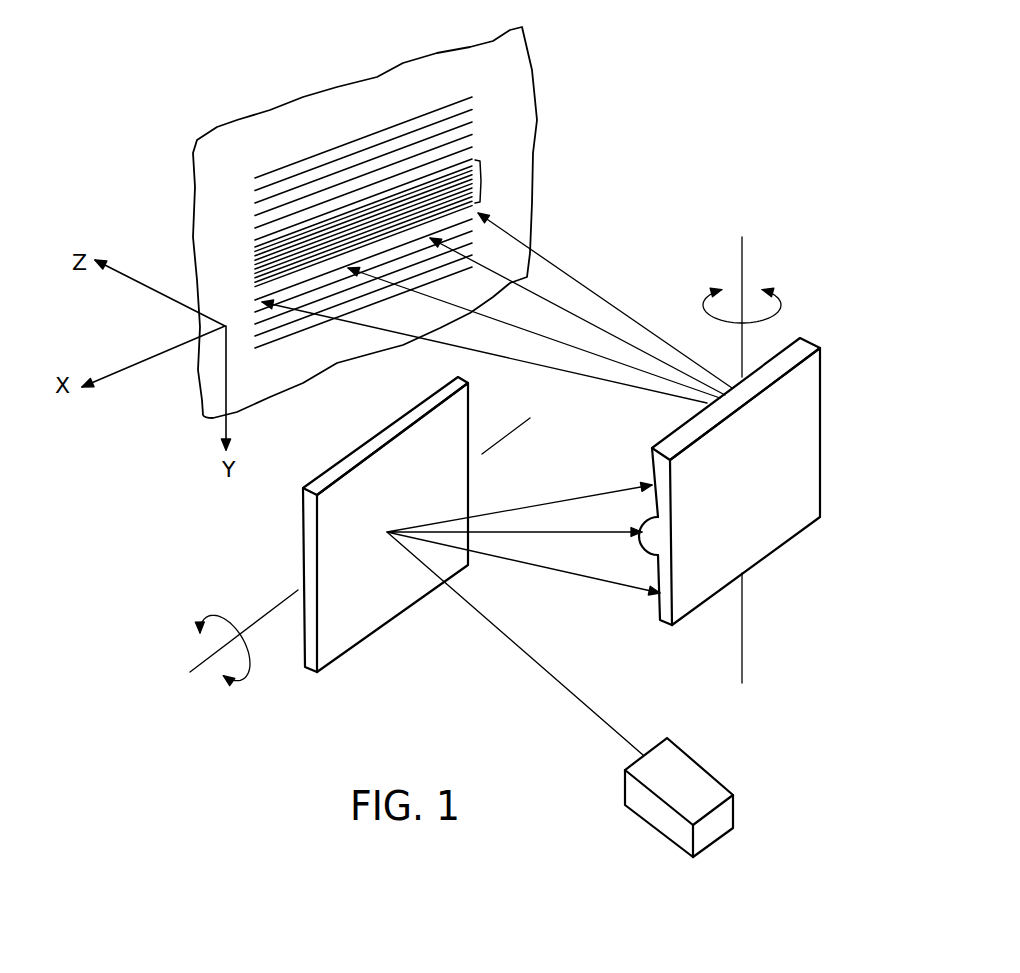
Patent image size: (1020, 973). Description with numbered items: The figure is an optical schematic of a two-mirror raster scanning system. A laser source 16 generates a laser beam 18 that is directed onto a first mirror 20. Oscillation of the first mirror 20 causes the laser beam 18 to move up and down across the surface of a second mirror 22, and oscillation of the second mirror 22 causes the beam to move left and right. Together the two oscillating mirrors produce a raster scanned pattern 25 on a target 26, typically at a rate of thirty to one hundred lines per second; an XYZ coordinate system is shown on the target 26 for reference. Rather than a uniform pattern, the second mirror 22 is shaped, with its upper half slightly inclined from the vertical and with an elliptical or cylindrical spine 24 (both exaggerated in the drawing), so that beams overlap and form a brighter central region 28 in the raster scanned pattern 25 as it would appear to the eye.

The laser source 16 is at (703, 780).
The laser beam 18 is at (552, 680).
The first mirror 20 is at (347, 637).
The second mirror 22 is at (724, 460).
The elliptical or cylindrical spine 24 is at (643, 520).
The raster scanned pattern 25 is at (399, 208).
The target 26 is at (515, 97).
The brighter central region 28 is at (485, 180).